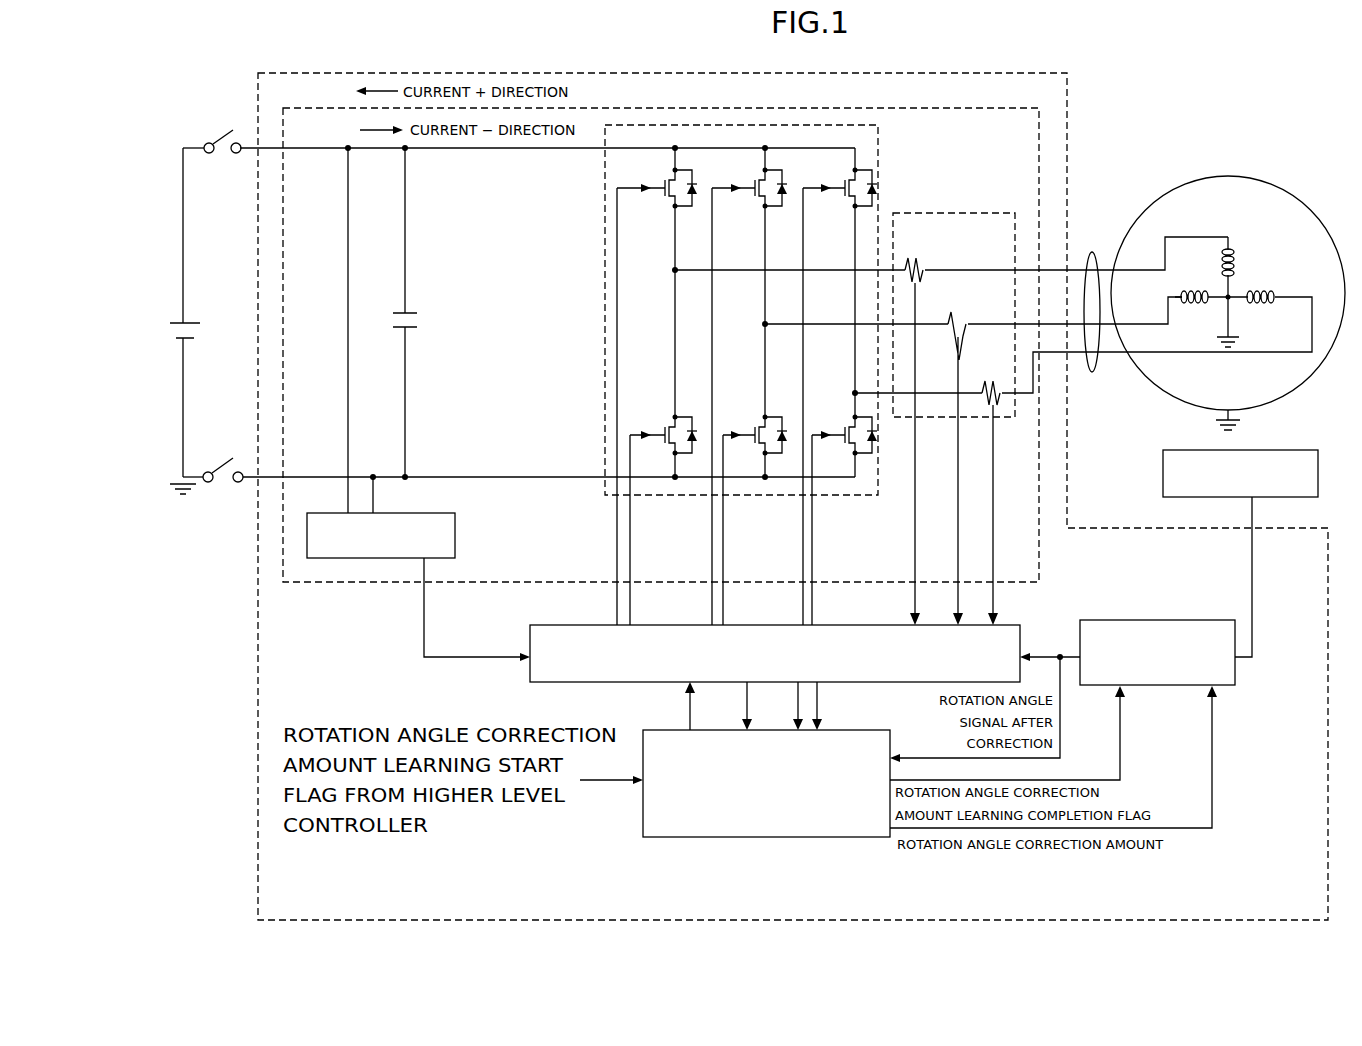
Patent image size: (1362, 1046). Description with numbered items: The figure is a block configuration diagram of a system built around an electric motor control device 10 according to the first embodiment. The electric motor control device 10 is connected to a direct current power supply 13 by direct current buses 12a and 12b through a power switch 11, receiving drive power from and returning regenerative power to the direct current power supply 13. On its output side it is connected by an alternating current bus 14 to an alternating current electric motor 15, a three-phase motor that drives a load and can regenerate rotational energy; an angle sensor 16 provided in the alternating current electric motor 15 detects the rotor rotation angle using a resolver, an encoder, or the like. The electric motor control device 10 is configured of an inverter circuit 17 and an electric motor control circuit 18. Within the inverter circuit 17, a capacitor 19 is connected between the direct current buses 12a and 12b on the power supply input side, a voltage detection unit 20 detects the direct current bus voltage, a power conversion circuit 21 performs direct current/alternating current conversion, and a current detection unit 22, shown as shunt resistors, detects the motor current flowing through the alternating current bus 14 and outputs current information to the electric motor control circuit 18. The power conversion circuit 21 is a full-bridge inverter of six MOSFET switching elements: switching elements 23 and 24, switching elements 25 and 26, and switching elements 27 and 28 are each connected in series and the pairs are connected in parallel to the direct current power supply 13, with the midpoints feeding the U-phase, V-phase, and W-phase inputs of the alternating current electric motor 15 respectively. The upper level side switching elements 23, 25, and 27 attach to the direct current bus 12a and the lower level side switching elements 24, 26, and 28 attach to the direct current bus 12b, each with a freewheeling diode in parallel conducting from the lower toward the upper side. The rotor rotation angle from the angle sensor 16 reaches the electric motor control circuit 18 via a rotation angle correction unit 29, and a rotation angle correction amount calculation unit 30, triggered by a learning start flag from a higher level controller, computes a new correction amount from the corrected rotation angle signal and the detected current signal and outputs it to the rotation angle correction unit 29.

The electric motor control device 10 is at (356, 72).
The power switch 11 is at (224, 130).
The direct current bus 12a is at (342, 146).
The direct current bus 12b is at (327, 474).
The direct current power supply 13 is at (166, 316).
The alternating current bus 14 is at (1094, 250).
The alternating current electric motor 15 is at (1186, 186).
The angle sensor 16 is at (1166, 450).
The inverter circuit 17 is at (934, 110).
The electric motor control circuit 18 is at (540, 625).
The capacitor 19 is at (394, 312).
The voltage detection unit 20 is at (458, 531).
The power conversion circuit 21 is at (882, 156).
The current detection unit 22 is at (964, 212).
The switching element 23 is at (660, 208).
The switching element 24 is at (664, 420).
The switching element 25 is at (752, 208).
The switching element 26 is at (754, 420).
The switching element 27 is at (842, 208).
The switching element 28 is at (844, 422).
The rotation angle correction unit 29 is at (1120, 620).
The rotation angle correction amount calculation unit 30 is at (755, 838).